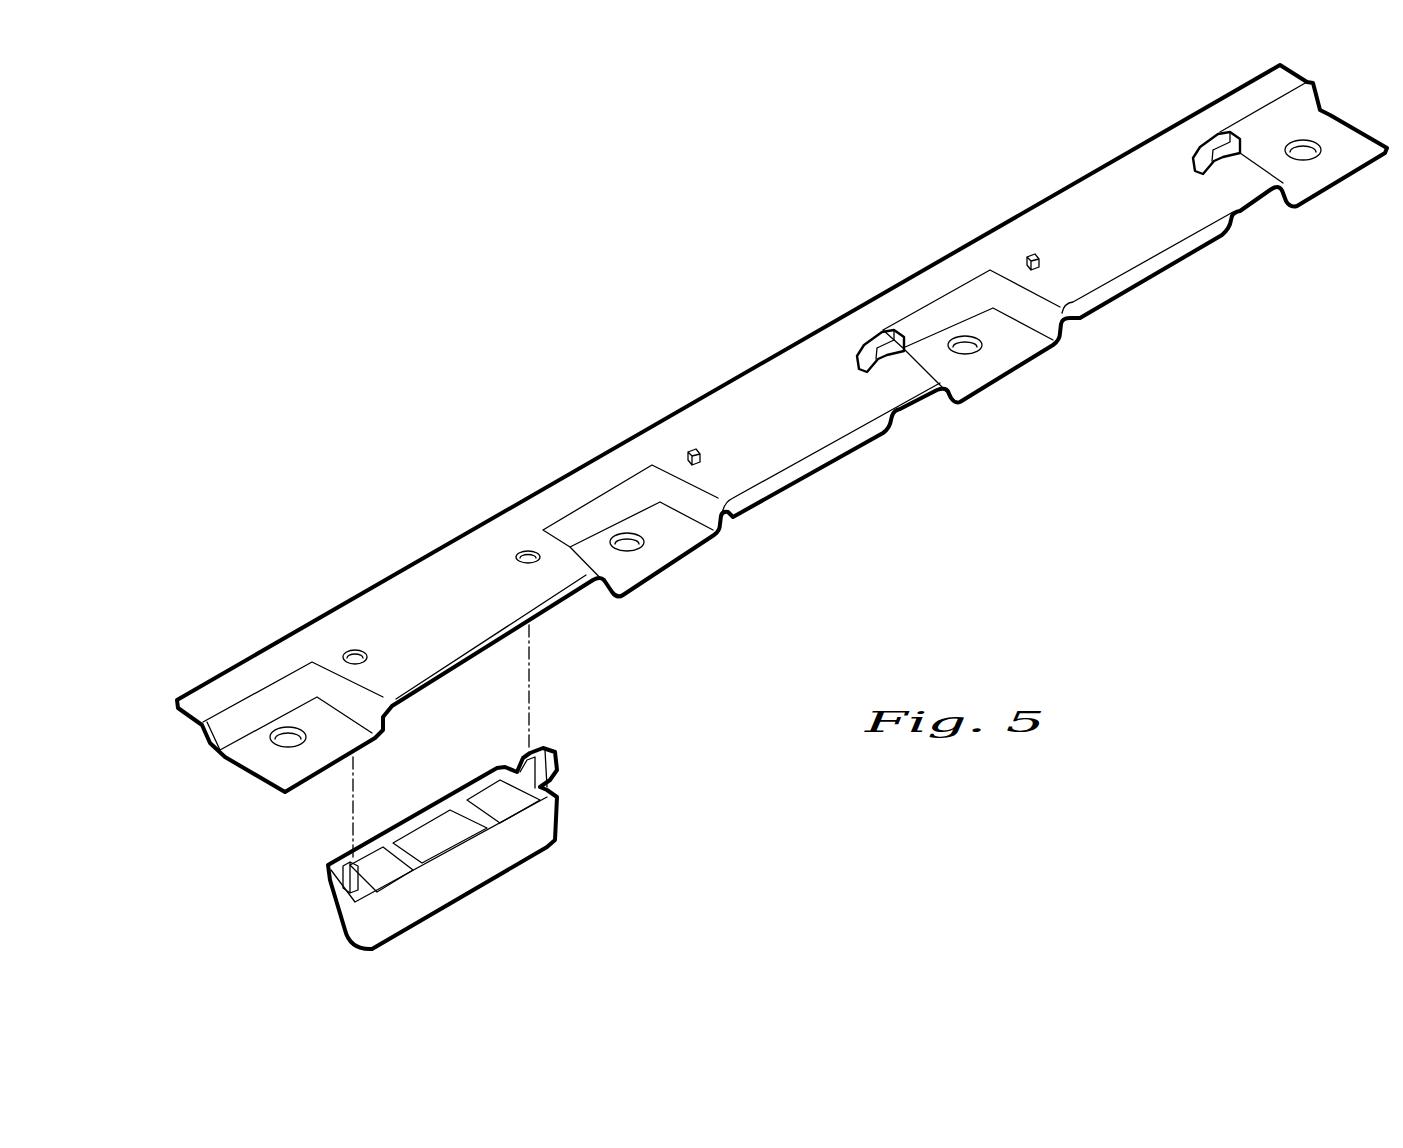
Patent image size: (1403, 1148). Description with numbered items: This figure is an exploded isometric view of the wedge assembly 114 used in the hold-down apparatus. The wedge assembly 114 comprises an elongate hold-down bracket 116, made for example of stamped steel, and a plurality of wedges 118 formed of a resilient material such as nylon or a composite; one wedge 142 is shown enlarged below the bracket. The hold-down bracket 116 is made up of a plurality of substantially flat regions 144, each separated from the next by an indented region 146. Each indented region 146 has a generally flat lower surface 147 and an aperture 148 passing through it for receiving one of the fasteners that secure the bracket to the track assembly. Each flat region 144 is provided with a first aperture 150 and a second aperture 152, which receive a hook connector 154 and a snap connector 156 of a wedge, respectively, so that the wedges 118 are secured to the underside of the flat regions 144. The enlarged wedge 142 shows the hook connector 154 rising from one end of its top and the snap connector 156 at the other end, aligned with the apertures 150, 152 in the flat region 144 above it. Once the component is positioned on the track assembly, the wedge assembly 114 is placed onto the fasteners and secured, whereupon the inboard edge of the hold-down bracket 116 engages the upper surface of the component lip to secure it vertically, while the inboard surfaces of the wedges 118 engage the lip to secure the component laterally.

The wedge assembly 114 is at (648, 365).
The hold-down bracket 116 is at (913, 293).
The wedges 118 is at (1147, 270).
The wedge 142 is at (436, 823).
The flat regions 144 is at (1078, 233).
The indented region 146 is at (655, 510).
The lower surface 147 is at (1023, 342).
The aperture 148 is at (968, 348).
The first aperture 150 is at (522, 550).
The second aperture 152 is at (352, 652).
The hook connector 154 is at (550, 748).
The snap connector 156 is at (340, 867).